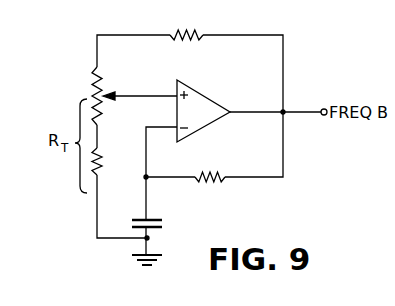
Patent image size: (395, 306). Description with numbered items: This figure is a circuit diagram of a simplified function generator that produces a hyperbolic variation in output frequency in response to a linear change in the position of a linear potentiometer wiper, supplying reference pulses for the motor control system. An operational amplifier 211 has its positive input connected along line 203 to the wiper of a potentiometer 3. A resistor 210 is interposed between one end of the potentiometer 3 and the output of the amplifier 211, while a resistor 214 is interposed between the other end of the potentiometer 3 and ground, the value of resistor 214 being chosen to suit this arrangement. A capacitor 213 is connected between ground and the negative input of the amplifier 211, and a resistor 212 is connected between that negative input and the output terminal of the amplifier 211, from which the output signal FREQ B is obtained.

The potentiometer 3 is at (106, 94).
The line 203 is at (156, 96).
The resistor 210 is at (204, 38).
The operational amplifier 211 is at (212, 117).
The resistor 212 is at (195, 175).
The capacitor 213 is at (157, 232).
The resistor 214 is at (101, 175).